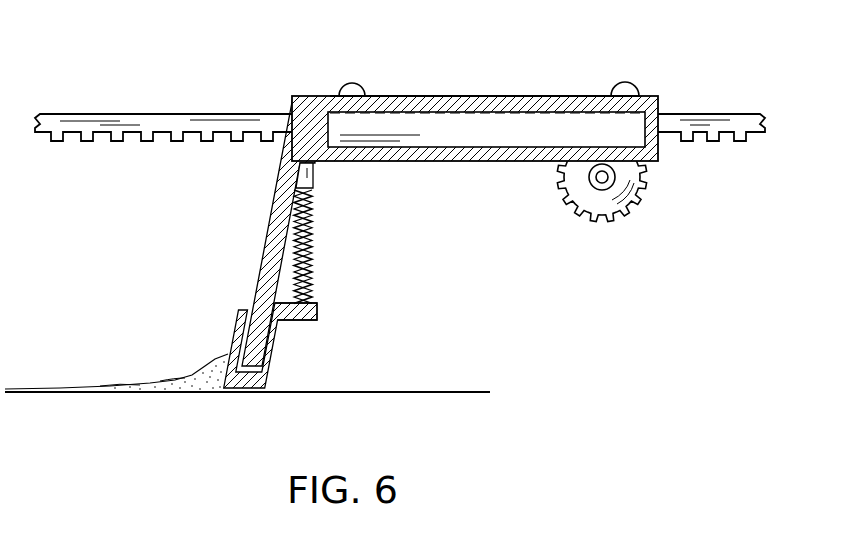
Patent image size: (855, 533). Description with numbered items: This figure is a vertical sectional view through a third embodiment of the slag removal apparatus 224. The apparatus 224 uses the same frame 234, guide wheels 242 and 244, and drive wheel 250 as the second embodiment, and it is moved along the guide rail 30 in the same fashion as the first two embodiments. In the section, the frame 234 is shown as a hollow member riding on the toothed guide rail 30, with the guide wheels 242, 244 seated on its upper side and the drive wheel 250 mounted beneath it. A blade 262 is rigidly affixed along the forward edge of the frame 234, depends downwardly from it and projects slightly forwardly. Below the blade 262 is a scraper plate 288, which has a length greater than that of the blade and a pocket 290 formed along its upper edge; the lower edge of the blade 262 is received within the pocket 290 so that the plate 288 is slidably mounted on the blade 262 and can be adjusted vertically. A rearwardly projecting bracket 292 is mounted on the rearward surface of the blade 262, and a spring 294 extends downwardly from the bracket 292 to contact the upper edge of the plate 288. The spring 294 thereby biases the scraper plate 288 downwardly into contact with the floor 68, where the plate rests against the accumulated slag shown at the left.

The guide rail 30 is at (130, 114).
The floor 68 is at (432, 390).
The slag removal apparatus 224 is at (490, 93).
The frame 234 is at (408, 96).
The guide wheel 242 is at (632, 88).
The guide wheel 244 is at (348, 88).
The drive wheel 250 is at (588, 218).
The blade 262 is at (268, 222).
The scraper plate 288 is at (273, 368).
The pocket 290 is at (247, 308).
The bracket 292 is at (318, 178).
The spring 294 is at (316, 252).